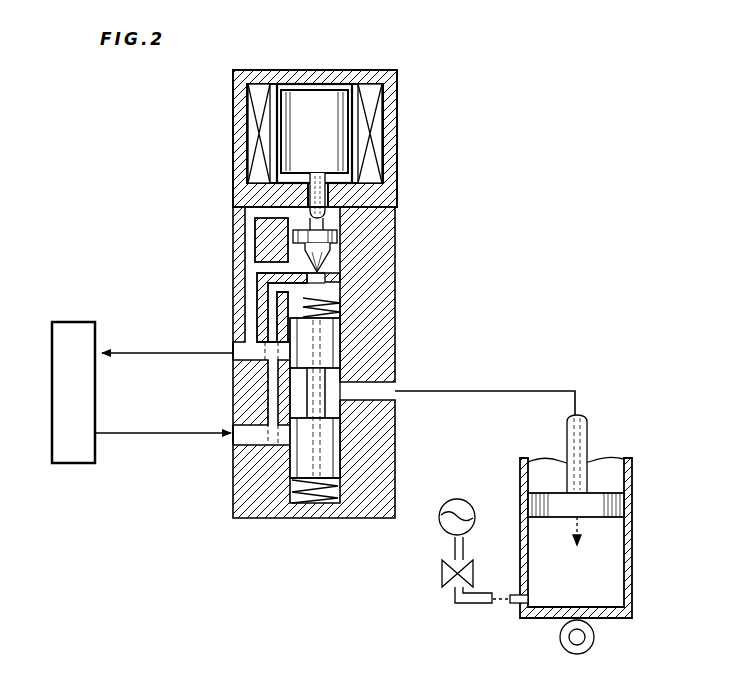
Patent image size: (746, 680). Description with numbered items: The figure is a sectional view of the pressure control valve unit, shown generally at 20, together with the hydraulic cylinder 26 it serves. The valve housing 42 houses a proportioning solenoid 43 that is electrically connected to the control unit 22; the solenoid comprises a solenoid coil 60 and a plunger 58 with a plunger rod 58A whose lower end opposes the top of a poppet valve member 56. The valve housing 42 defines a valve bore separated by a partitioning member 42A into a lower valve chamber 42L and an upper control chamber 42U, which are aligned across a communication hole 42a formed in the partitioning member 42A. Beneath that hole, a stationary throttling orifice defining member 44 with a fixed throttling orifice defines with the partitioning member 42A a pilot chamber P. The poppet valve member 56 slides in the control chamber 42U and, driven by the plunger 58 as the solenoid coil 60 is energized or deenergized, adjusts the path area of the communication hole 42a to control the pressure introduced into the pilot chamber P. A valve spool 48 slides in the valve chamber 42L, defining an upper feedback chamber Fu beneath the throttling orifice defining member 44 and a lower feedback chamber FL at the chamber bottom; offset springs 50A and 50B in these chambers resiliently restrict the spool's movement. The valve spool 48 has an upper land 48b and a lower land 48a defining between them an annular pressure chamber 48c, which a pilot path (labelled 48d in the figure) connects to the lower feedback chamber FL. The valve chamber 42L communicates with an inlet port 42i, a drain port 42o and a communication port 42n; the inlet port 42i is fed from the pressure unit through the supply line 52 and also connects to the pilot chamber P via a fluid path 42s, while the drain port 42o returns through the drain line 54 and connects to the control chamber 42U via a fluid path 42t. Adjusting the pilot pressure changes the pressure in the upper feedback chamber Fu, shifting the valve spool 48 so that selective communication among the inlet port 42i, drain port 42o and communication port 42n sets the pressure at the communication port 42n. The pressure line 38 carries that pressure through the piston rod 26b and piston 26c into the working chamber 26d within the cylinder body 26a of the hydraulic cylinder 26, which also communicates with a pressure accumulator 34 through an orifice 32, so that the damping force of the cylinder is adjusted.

The solenoid-operated control valve assembly 20 is at (412, 193).
The control unit 22 is at (72, 322).
The hydraulic cylinder 26 is at (571, 528).
The cylinder body 26a is at (632, 550).
The piston rod 26b is at (585, 420).
The piston 26c is at (528, 500).
The working chamber 26d is at (608, 590).
The orifice 32 is at (445, 578).
The pressure accumulator 34 is at (442, 528).
The pressure line 38 is at (528, 391).
The valve housing 42 is at (375, 302).
The communication hole 42a is at (338, 268).
The partitioning member 42A is at (332, 262).
The inlet port 42i is at (250, 443).
The drain port 42o is at (248, 352).
The communication port 42n is at (375, 403).
The fluid path 42s is at (270, 403).
The fluid path 42t is at (248, 248).
The valve chamber 42L is at (340, 320).
The control chamber 42U is at (292, 232).
The proportioning solenoid 43 is at (400, 116).
The throttling orifice defining member 44 is at (333, 280).
The valve spool 48 is at (319, 410).
The lower land 48a is at (340, 463).
The upper land 48b is at (340, 342).
The annular pressure chamber 48c is at (340, 375).
The spool passage 48d is at (303, 468).
The offset spring 50A is at (300, 305).
The offset spring 50B is at (323, 500).
The pressure supply line 52 is at (122, 433).
The pressure drain line 54 is at (122, 353).
The poppet valve member 56 is at (265, 235).
The plunger 58 is at (323, 78).
The plunger rod 58A is at (322, 176).
The solenoid coil 60 is at (255, 102).
The pilot chamber P is at (262, 287).
The upper feedback chamber Fu is at (300, 316).
The lower feedback chamber FL is at (293, 503).